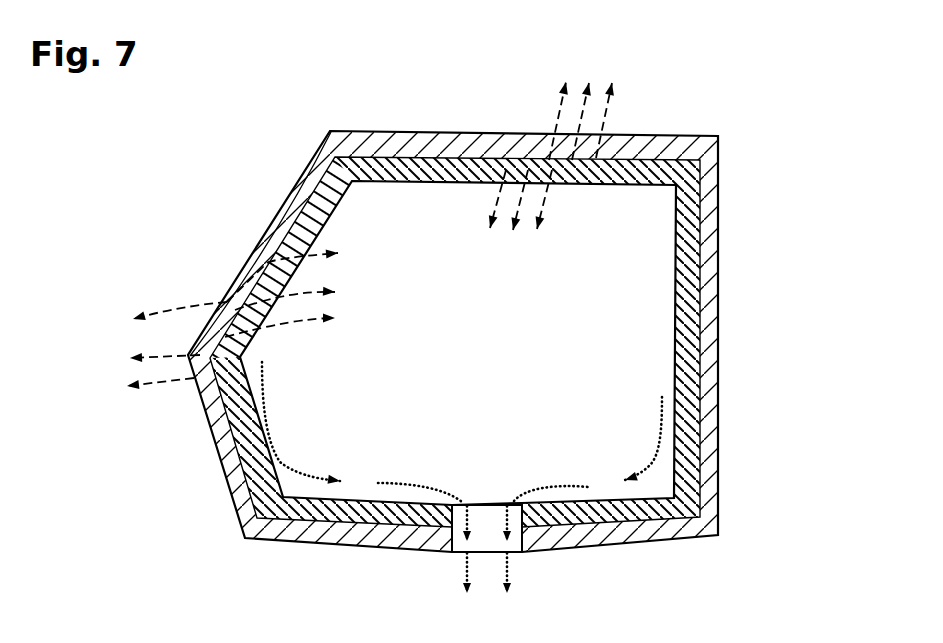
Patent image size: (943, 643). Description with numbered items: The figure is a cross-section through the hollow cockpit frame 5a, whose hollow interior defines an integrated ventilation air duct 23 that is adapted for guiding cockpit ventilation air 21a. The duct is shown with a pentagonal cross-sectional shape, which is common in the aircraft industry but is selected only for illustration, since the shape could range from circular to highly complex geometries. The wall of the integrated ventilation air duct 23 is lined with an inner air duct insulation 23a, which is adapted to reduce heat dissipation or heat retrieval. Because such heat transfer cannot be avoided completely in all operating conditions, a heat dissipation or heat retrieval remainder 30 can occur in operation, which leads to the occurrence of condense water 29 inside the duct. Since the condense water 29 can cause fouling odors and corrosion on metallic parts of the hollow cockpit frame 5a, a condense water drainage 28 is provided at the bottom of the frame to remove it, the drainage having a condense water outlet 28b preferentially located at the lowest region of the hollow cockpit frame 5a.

The hollow cockpit frame 5a is at (280, 203).
The heat dissipation or heat retrieval remainder 30 is at (603, 122).
The inner air duct insulation 23a is at (687, 192).
The cockpit ventilation air 21a is at (620, 263).
The integrated ventilation air duct 23 is at (680, 307).
The condense water 29 is at (660, 448).
The condense water drainage 28 is at (483, 504).
The condense water outlet 28b is at (487, 556).